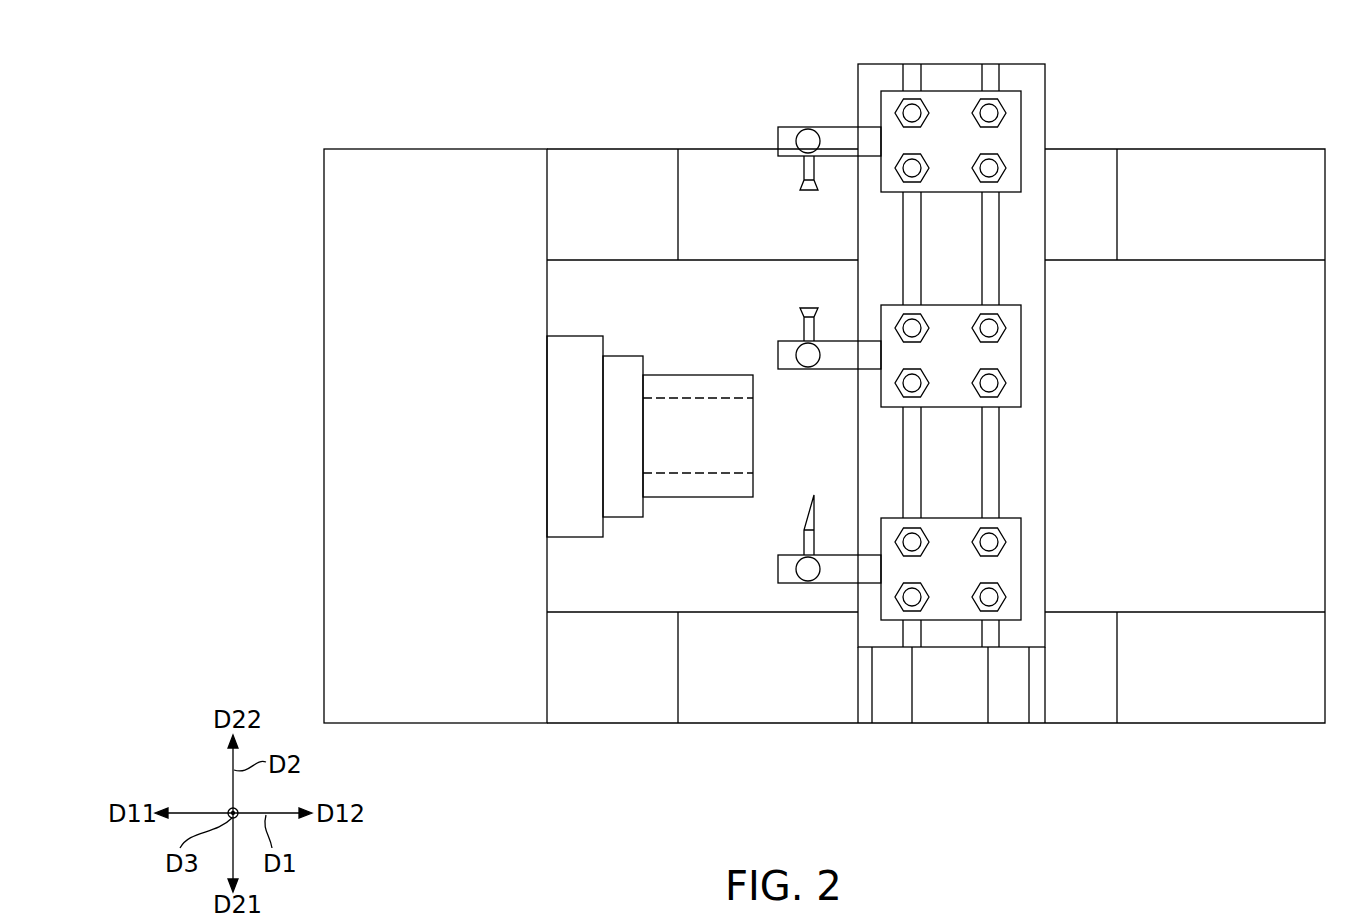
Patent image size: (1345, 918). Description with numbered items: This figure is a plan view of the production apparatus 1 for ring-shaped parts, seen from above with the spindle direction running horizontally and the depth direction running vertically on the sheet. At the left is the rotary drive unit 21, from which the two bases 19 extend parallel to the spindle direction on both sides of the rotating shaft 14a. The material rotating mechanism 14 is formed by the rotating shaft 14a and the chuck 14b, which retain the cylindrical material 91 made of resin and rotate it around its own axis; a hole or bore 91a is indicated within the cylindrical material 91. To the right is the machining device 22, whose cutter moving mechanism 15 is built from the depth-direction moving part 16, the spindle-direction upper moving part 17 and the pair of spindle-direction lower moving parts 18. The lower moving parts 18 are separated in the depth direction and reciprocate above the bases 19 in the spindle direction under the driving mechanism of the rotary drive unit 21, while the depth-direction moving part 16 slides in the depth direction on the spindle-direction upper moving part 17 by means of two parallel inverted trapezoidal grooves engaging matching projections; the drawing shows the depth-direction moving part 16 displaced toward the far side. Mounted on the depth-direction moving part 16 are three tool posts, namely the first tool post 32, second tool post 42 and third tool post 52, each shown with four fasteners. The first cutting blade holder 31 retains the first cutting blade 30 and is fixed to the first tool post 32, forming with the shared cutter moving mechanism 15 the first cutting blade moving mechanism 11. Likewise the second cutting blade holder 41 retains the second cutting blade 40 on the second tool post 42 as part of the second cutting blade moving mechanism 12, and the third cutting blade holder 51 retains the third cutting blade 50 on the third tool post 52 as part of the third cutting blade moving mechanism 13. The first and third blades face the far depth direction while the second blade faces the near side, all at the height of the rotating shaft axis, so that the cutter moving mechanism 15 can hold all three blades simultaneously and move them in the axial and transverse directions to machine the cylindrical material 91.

The production apparatus 1 is at (795, 418).
The first cutting blade moving mechanism 11 is at (902, 335).
The second cutting blade moving mechanism 12 is at (902, 120).
The third cutting blade moving mechanism 13 is at (902, 550).
The material rotating mechanism 14 is at (599, 320).
The rotating shaft 14a is at (576, 336).
The chuck 14b is at (627, 400).
The cutter moving mechanism 15 is at (920, 436).
The depth-direction moving part 16 is at (1025, 441).
The spindle-direction upper moving part 17 is at (948, 705).
The spindle-direction lower moving part 18 is at (752, 705).
The base 19 is at (593, 705).
The rotary drive unit 21 is at (463, 705).
The machining device 22 is at (1093, 765).
The first cutting blade 30 is at (800, 320).
The first cutting blade holder 31 is at (835, 350).
The first tool post 32 is at (998, 358).
The second cutting blade 40 is at (800, 176).
The second cutting blade holder 41 is at (834, 128).
The second tool post 42 is at (1007, 141).
The third cutting blade 50 is at (804, 532).
The third cutting blade holder 51 is at (835, 565).
The third tool post 52 is at (1003, 568).
The cylindrical material 91 is at (731, 490).
The lens barrel hole 91a is at (753, 482).